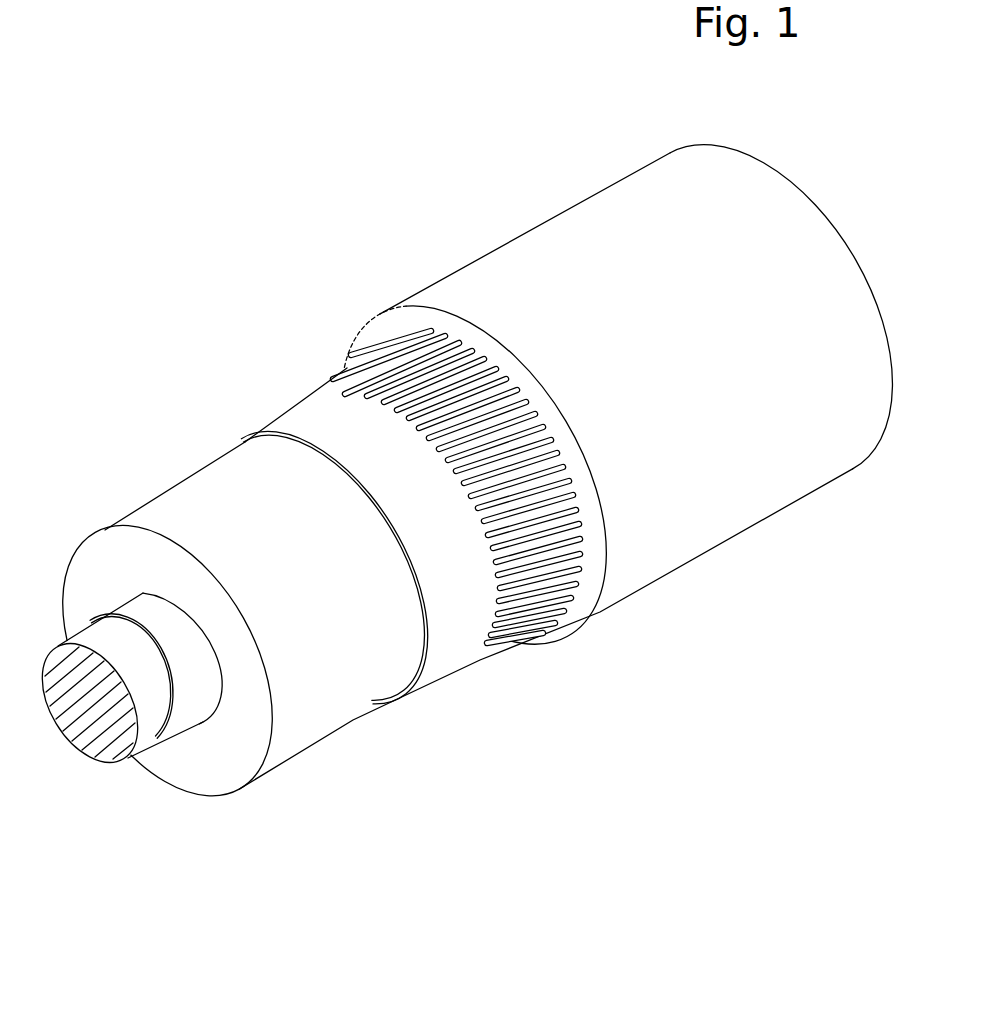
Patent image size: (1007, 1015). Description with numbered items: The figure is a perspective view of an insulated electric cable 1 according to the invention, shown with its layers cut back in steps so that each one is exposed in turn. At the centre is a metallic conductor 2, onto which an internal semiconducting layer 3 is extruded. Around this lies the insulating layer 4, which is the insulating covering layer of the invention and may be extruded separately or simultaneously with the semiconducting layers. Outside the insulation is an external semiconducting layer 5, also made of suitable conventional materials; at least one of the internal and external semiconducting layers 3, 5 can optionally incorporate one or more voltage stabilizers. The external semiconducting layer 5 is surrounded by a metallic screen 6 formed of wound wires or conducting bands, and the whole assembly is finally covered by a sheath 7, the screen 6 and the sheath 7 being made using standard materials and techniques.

The insulated electric cable 1 is at (455, 512).
The metallic conductor 2 is at (129, 736).
The internal semiconducting layer 3 is at (192, 715).
The insulating layer 4 is at (125, 563).
The external semiconducting layer 5 is at (297, 413).
The metallic screen 6 is at (513, 638).
The sheath 7 is at (647, 571).